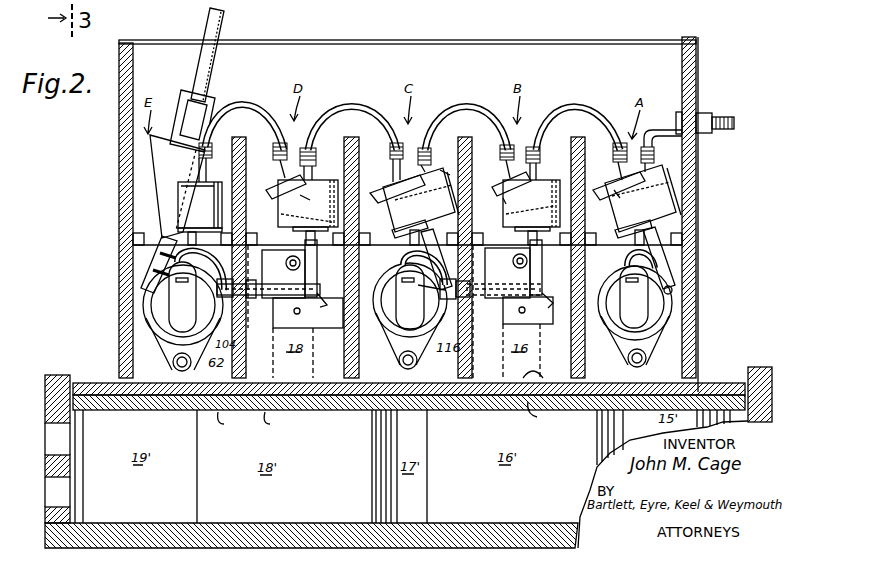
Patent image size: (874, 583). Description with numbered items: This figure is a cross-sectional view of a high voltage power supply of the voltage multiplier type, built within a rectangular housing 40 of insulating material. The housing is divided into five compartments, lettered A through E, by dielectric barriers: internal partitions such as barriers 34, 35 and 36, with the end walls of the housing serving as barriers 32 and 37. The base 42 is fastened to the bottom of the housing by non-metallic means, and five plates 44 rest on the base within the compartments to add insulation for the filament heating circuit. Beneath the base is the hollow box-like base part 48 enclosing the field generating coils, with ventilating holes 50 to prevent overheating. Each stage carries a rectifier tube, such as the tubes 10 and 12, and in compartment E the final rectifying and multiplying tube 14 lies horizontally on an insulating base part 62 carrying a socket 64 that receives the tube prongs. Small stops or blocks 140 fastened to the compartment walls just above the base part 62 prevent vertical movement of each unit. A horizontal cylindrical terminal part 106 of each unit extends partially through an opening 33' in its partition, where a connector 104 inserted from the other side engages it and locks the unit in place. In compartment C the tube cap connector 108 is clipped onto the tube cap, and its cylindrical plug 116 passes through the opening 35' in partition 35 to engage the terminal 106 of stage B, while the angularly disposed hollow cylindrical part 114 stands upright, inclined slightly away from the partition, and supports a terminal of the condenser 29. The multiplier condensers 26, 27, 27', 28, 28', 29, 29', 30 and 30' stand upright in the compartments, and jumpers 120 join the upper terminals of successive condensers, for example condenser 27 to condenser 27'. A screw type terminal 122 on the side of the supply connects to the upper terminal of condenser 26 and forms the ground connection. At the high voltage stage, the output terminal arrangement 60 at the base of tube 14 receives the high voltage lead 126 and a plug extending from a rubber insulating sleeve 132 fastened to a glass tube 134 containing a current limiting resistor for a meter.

The rectifier tube 10 is at (615, 297).
The rectifier tube 12 is at (390, 300).
The rectifying and multiplying tube 14 is at (143, 312).
The condenser 26 is at (662, 178).
The condenser 27 is at (604, 207).
The condenser 27' is at (526, 202).
The condenser 28 is at (493, 211).
The condenser 28' is at (442, 152).
The condenser 29 is at (411, 202).
The condenser 29' is at (320, 175).
The condenser 30 is at (297, 202).
The condenser 30' is at (200, 197).
The dielectric barrier 32 is at (118, 123).
The opening 33' is at (265, 264).
The dielectric barrier 34 is at (352, 132).
The dielectric barrier 35 is at (463, 228).
The opening 35' is at (469, 273).
The dielectric barrier 36 is at (583, 133).
The dielectric barrier 37 is at (697, 73).
The housing 40 is at (710, 199).
The base 42 is at (710, 376).
The plates 44 is at (387, 419).
The box-like base part 48 is at (767, 364).
The ventilating holes 50 is at (57, 375).
The high voltage output terminal arrangement 60 is at (140, 255).
The base part 62 is at (225, 288).
The socket 64 is at (172, 353).
The connector 104 is at (200, 270).
The horizontal cylindrical terminal part 106 is at (252, 285).
The tube cap connector 108 is at (410, 307).
The hollow cylindrical part 114 is at (417, 242).
The cylindrical plug 116 is at (431, 287).
The jumpers 120 is at (233, 113).
The screw type terminal 122 is at (717, 113).
The high voltage lead 126 is at (220, 38).
The rubber insulating sleeve 132 is at (160, 173).
The glass tube 134 is at (177, 96).
The stops or blocks 140 is at (135, 240).